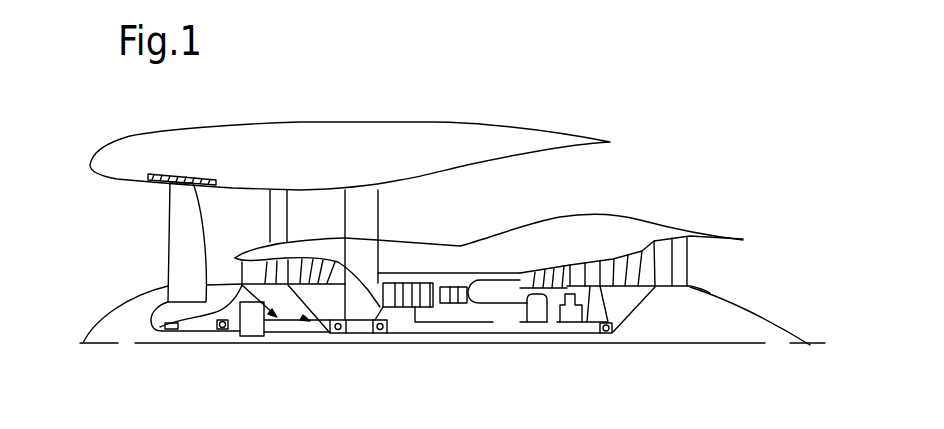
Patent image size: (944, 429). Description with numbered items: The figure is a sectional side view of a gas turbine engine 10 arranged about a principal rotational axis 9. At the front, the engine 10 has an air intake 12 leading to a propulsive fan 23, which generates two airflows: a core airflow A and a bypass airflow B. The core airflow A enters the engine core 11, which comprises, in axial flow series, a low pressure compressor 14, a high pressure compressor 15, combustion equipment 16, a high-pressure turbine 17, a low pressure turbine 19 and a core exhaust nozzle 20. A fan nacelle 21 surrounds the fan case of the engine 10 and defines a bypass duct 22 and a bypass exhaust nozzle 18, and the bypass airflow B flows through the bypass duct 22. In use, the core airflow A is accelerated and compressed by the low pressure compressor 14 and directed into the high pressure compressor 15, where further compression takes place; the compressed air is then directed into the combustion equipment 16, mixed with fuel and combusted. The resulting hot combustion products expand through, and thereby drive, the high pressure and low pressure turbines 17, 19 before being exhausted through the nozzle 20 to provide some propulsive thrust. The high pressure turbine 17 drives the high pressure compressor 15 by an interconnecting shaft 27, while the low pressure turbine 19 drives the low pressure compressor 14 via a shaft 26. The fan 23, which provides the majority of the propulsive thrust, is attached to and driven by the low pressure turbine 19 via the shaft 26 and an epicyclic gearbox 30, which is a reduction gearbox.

The principal rotational axis 9 is at (657, 346).
The gas turbine engine 10 is at (150, 133).
The core 11 is at (485, 265).
The air intake 12 is at (108, 210).
The low pressure compressor 14 is at (312, 266).
The high pressure compressor 15 is at (430, 270).
The combustion equipment 16 is at (503, 293).
The high-pressure turbine 17 is at (545, 282).
The bypass exhaust nozzle 18 is at (656, 174).
The low pressure turbine 19 is at (665, 253).
The core exhaust nozzle 20 is at (722, 272).
The fan nacelle 21 is at (368, 135).
The bypass duct 22 is at (587, 188).
The propulsive fan 23 is at (170, 247).
The shaft 26 is at (430, 335).
The interconnecting shaft 27 is at (462, 324).
The epicyclic gearbox 30 is at (253, 320).
The core airflow A is at (233, 274).
The bypass airflow B is at (243, 220).